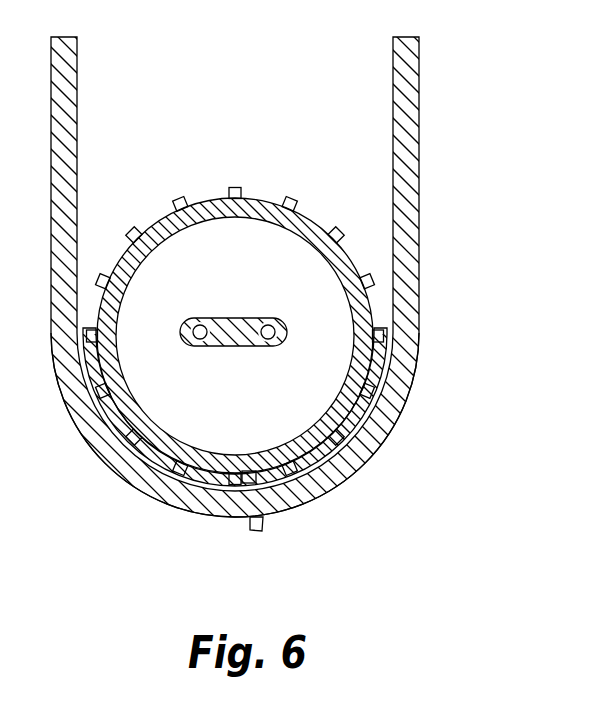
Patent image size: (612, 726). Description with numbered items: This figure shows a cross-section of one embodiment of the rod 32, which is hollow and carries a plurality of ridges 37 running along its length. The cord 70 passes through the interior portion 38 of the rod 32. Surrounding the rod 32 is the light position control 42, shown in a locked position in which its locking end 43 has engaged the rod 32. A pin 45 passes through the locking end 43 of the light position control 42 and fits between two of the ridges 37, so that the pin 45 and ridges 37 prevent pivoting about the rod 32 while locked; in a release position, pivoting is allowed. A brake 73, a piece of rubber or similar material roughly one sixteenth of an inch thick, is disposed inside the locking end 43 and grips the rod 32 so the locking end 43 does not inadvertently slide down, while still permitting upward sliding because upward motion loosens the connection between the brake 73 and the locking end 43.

The rod 32 is at (264, 198).
The ridges 37 is at (233, 188).
The interior portion 38 is at (299, 262).
The light position control 42 is at (418, 140).
The locking end 43 is at (355, 464).
The pin 45 is at (263, 518).
The cord 70 is at (221, 313).
The brake 73 is at (383, 401).